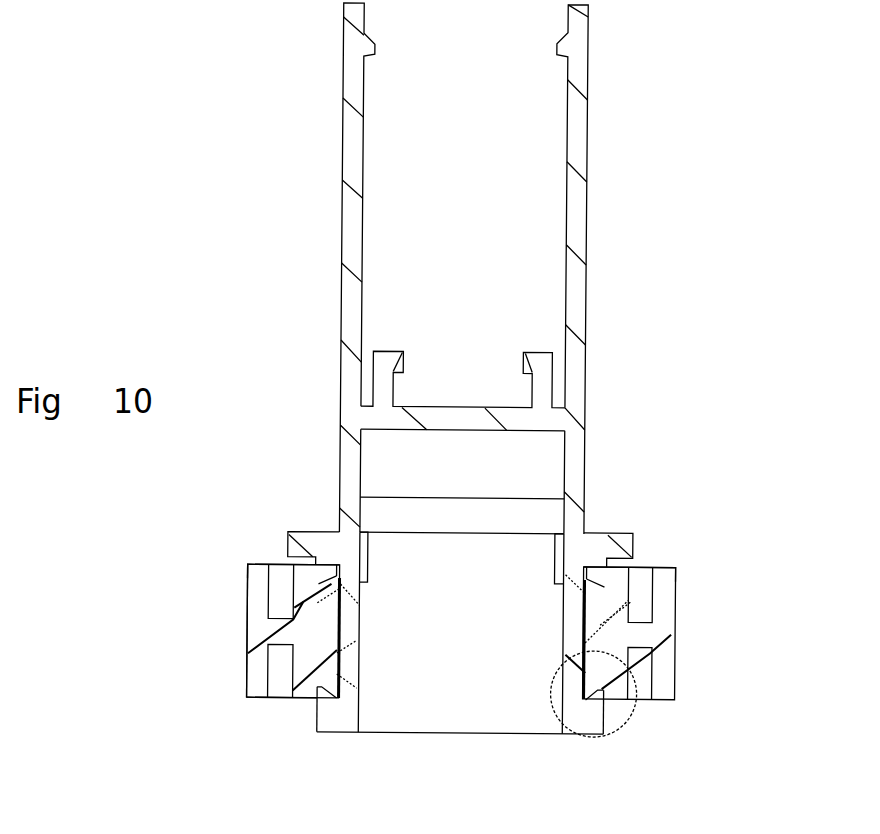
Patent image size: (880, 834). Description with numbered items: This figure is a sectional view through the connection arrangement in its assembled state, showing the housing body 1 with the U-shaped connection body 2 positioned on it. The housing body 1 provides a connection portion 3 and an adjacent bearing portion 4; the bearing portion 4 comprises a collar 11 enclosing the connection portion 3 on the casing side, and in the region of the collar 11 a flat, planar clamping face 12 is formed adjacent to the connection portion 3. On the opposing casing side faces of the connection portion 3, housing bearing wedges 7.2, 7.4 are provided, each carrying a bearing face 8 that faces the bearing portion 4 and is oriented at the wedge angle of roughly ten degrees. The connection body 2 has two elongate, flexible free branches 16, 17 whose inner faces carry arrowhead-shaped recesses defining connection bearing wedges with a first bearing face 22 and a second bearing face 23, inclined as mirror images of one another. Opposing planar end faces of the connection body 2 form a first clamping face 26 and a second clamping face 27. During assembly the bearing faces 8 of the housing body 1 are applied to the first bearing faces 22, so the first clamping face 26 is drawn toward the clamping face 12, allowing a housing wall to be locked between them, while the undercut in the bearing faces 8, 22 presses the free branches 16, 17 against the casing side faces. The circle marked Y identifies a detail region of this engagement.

The housing body 1 is at (664, 226).
The connection body 2 is at (210, 586).
The connection portion 3 is at (484, 709).
The bearing portion 4 is at (641, 522).
The housing bearing wedge 7.2 is at (596, 718).
The housing bearing wedge 7.4 is at (330, 714).
The bearing face 8 is at (326, 685).
The collar 11 is at (629, 543).
The clamping face 12 is at (621, 566).
The free branch 16 is at (660, 634).
The free branch 17 is at (258, 628).
The first bearing face 22 is at (600, 701).
The second bearing face 23 is at (325, 585).
The first clamping face 26 is at (253, 564).
The second clamping face 27 is at (257, 705).
The detail circle Y is at (556, 713).